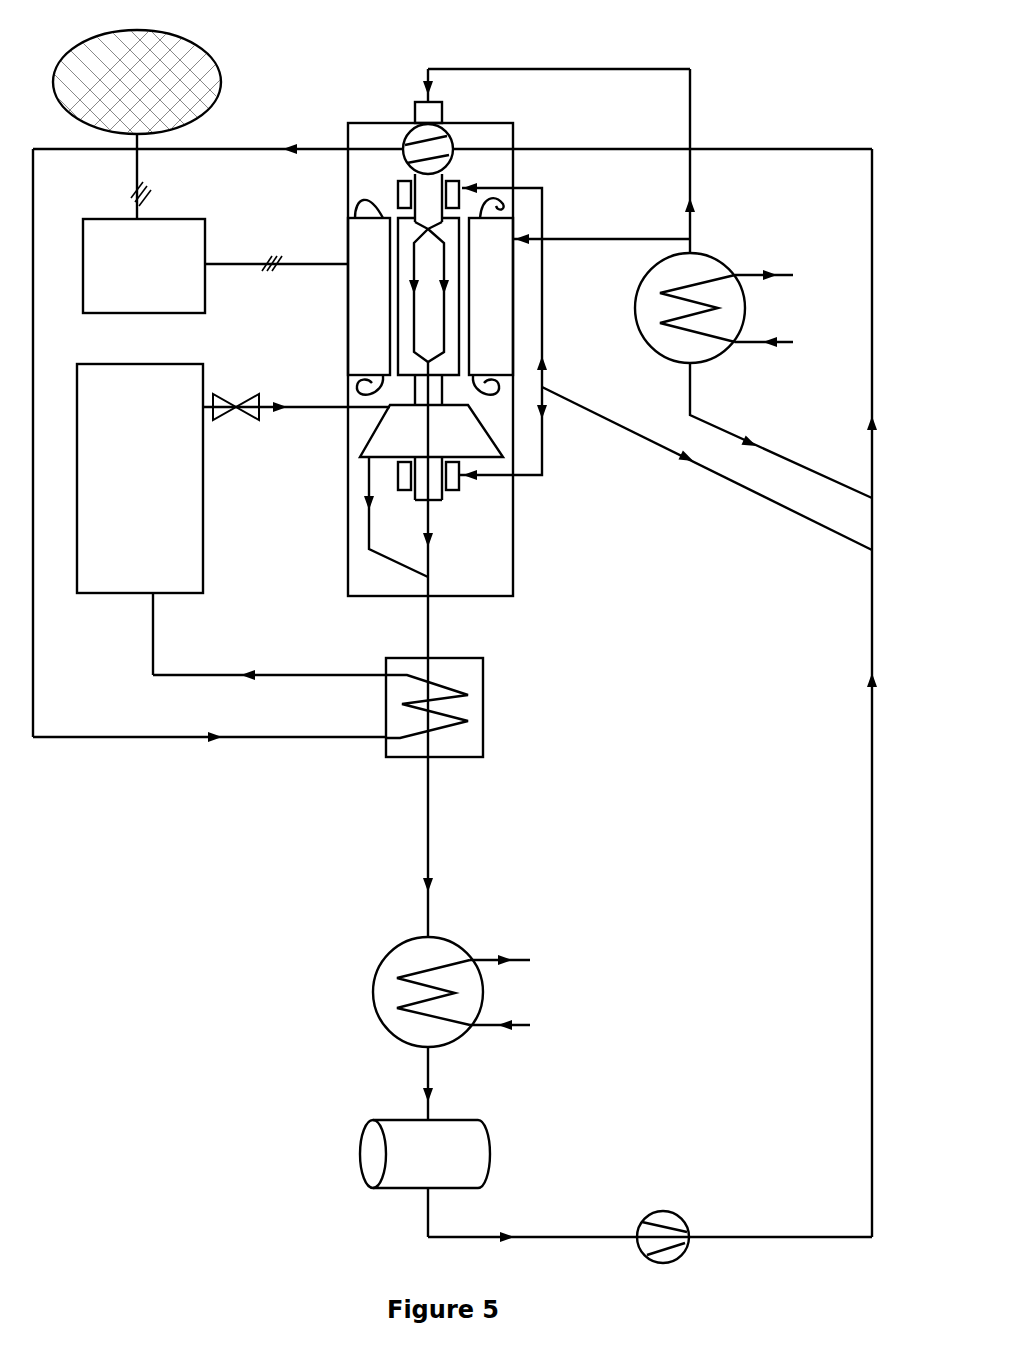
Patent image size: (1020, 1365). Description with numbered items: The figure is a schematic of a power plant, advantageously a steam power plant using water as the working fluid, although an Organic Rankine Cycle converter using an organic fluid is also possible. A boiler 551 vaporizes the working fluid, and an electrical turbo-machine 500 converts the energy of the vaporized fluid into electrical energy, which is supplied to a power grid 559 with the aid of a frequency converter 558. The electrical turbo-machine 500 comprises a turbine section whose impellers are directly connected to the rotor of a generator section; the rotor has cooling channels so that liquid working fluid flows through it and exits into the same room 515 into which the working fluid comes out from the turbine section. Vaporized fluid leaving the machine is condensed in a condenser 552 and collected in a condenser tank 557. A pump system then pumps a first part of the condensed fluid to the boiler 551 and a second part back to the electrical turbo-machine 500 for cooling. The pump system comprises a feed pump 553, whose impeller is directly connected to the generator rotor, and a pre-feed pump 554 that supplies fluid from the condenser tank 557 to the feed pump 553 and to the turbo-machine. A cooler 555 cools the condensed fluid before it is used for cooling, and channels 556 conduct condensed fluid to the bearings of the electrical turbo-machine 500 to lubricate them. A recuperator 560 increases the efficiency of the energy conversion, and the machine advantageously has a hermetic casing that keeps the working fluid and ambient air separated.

The electrical turbo-machine 500 is at (463, 304).
The room 515 is at (472, 578).
The boiler 551 is at (140, 478).
The condenser 552 is at (373, 975).
The feed pump 553 is at (455, 142).
The pre-feed pump 554 is at (663, 1263).
The cooler 555 is at (718, 354).
The channels 556 is at (545, 353).
The condenser tank 557 is at (425, 1154).
The frequency converter 558 is at (144, 266).
The power grid 559 is at (180, 100).
The recuperator 560 is at (483, 700).